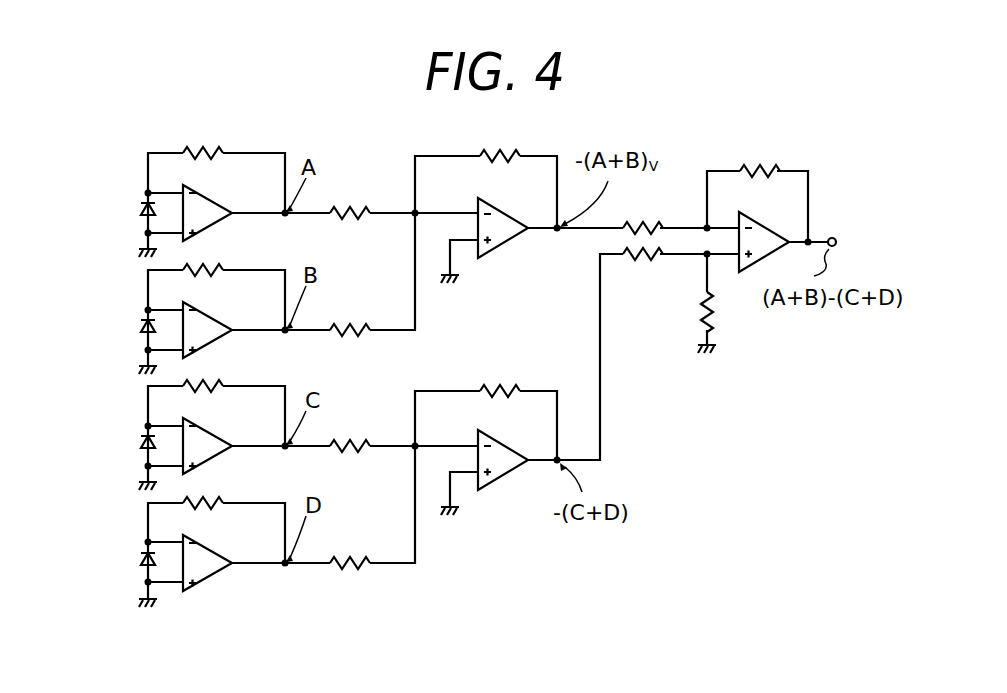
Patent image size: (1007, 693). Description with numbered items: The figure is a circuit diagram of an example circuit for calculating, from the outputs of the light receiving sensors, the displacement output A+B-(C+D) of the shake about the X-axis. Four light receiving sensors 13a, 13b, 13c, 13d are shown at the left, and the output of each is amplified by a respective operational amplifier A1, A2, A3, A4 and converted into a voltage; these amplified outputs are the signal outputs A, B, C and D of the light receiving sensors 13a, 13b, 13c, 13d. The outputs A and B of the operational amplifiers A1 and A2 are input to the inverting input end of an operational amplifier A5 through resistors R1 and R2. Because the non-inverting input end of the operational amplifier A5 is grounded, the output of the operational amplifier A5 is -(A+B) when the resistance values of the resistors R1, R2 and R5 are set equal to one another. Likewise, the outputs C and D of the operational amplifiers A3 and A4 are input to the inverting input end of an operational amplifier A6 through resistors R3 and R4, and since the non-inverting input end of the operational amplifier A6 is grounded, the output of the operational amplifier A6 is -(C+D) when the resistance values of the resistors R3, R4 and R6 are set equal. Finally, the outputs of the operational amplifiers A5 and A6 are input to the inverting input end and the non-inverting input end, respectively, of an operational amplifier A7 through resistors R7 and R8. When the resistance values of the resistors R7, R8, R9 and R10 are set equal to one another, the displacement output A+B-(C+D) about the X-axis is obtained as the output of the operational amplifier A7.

The light receiving sensor 13a is at (143, 209).
The light receiving sensor 13b is at (143, 325).
The light receiving sensor 13c is at (143, 441).
The light receiving sensor 13d is at (143, 558).
The operational amplifier A1 is at (205, 196).
The operational amplifier A2 is at (205, 314).
The operational amplifier A3 is at (200, 430).
The operational amplifier A4 is at (203, 548).
The operational amplifier A5 is at (503, 216).
The operational amplifier A6 is at (503, 448).
The operational amplifier A7 is at (764, 229).
The resistor R1 is at (350, 200).
The resistor R2 is at (350, 318).
The resistor R3 is at (350, 434).
The resistor R4 is at (350, 553).
The resistor R5 is at (500, 143).
The resistor R6 is at (500, 377).
The resistor R7 is at (643, 215).
The resistor R8 is at (643, 268).
The resistor R9 is at (722, 312).
The resistor R10 is at (760, 158).